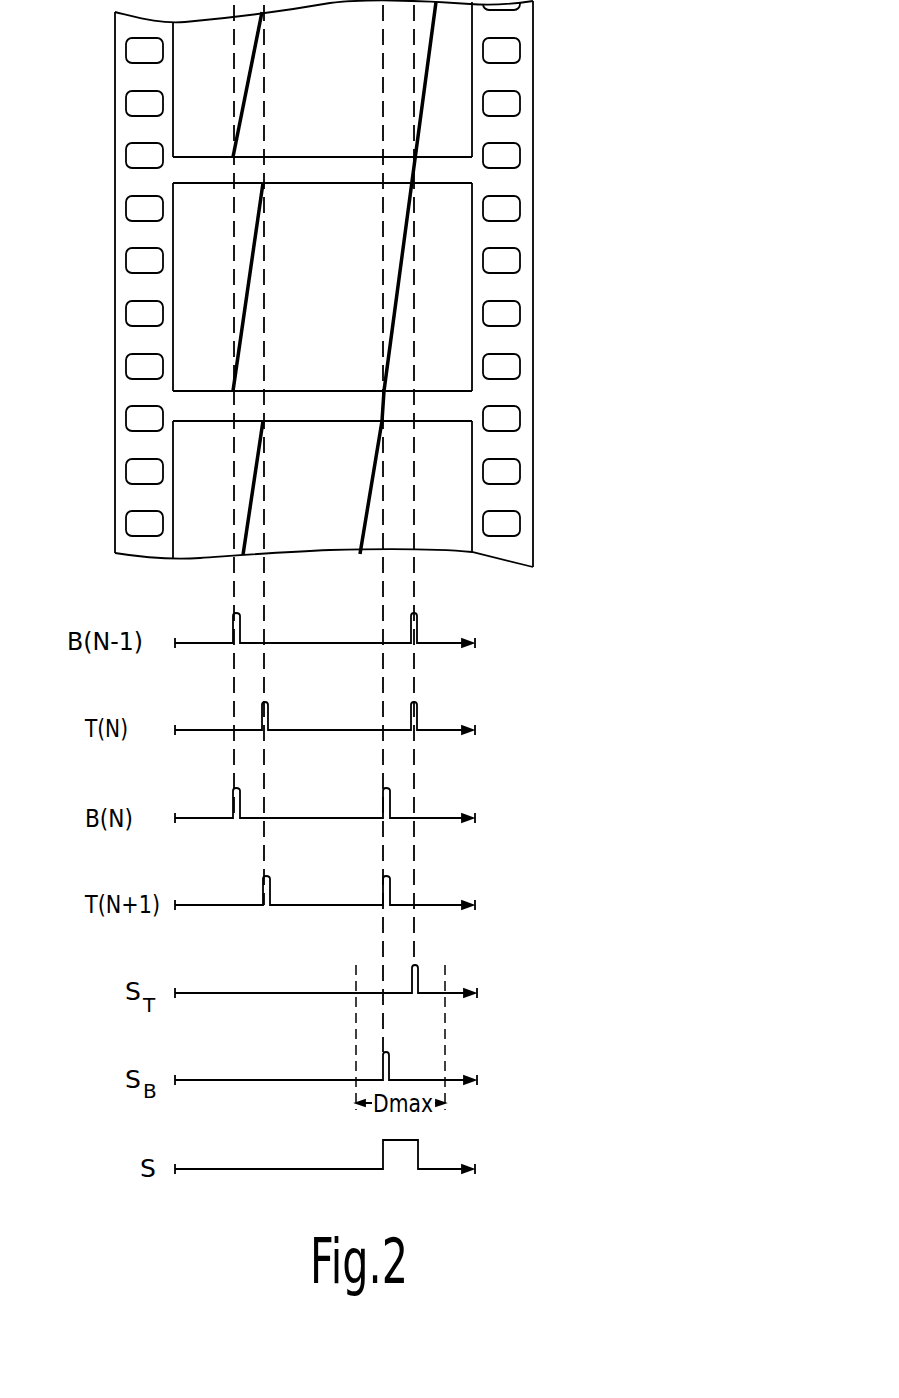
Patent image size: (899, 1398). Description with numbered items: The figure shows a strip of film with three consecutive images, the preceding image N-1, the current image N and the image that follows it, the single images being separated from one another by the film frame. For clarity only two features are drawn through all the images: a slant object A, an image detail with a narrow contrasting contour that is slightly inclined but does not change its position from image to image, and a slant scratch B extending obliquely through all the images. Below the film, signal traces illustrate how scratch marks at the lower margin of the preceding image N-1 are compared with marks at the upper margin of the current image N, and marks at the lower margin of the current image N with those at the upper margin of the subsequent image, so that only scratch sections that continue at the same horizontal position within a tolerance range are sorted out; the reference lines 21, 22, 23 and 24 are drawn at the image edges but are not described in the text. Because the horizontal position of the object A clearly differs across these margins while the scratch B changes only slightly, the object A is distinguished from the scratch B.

The upper edge line of image frame N 21 is at (200, 183).
The lower edge line of image frame N 22 is at (197, 391).
The lower edge line of image frame N-1 23 is at (205, 157).
The upper edge line of image frame N+1 24 is at (215, 421).
The slant object A is at (250, 269).
The slant scratch B is at (415, 283).
The preceding image N-1 is at (412, 80).
The current image N is at (400, 218).